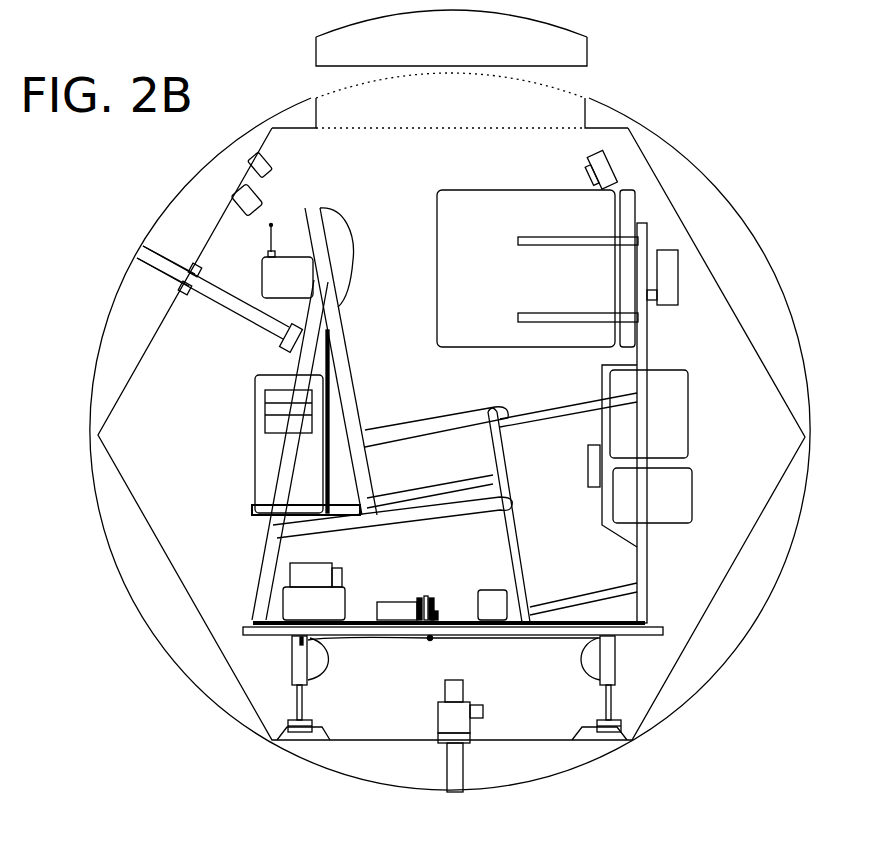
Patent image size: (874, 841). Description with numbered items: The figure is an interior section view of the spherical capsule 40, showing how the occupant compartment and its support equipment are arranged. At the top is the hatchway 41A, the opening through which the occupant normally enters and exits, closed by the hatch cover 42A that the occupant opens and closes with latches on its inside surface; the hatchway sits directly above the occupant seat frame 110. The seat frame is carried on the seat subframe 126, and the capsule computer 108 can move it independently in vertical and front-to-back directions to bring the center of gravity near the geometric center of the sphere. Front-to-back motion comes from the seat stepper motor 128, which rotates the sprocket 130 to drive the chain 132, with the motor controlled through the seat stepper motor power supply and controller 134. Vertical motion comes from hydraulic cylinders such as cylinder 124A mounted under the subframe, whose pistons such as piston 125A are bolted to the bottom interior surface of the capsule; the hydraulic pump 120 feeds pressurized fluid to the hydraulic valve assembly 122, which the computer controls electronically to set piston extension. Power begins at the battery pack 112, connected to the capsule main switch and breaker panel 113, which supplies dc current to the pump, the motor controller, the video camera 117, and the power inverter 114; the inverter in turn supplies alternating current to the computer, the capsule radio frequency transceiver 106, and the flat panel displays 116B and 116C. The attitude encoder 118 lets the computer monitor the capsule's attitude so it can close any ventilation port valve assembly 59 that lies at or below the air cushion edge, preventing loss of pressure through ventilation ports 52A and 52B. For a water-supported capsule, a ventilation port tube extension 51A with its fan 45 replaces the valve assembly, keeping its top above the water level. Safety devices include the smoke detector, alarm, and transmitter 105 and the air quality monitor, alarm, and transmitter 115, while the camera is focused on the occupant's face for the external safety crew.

The capsule 40 is at (694, 167).
The hatchway 41A is at (560, 123).
The hatch cover 42A is at (587, 46).
The ventilation port tube extension fan 45 is at (283, 348).
The ventilation port tube extension 51A is at (240, 313).
The ventilation port 52A is at (132, 257).
The ventilation port 52B is at (447, 770).
The ventilation port valve assembly 59 is at (474, 723).
The smoke detector, alarm, and transmitter 105 is at (268, 165).
The capsule radio frequency transceiver 106 is at (263, 271).
The capsule computer 108 is at (255, 440).
The occupant seat frame 110 is at (262, 535).
The battery pack 112 is at (693, 405).
The capsule main switch and breaker panel 113 is at (588, 470).
The power inverter 114 is at (695, 502).
The air quality monitor, alarm, and transmitter 115 is at (260, 195).
The flat panel display 116B is at (630, 188).
The flat panel display 116C is at (488, 190).
The video camera 117 is at (593, 150).
The attitude encoder 118 is at (678, 277).
The hydraulic pump 120 is at (290, 568).
The hydraulic valve assembly 122 is at (283, 600).
The hydraulic cylinder 124A is at (290, 665).
The hydraulic cylinder piston 125A is at (304, 705).
The seat subframe 126 is at (673, 627).
The seat stepper motor 128 is at (403, 602).
The sprocket 130 is at (423, 597).
The chain 132 is at (436, 616).
The seat stepper motor power supply and controller 134 is at (490, 590).